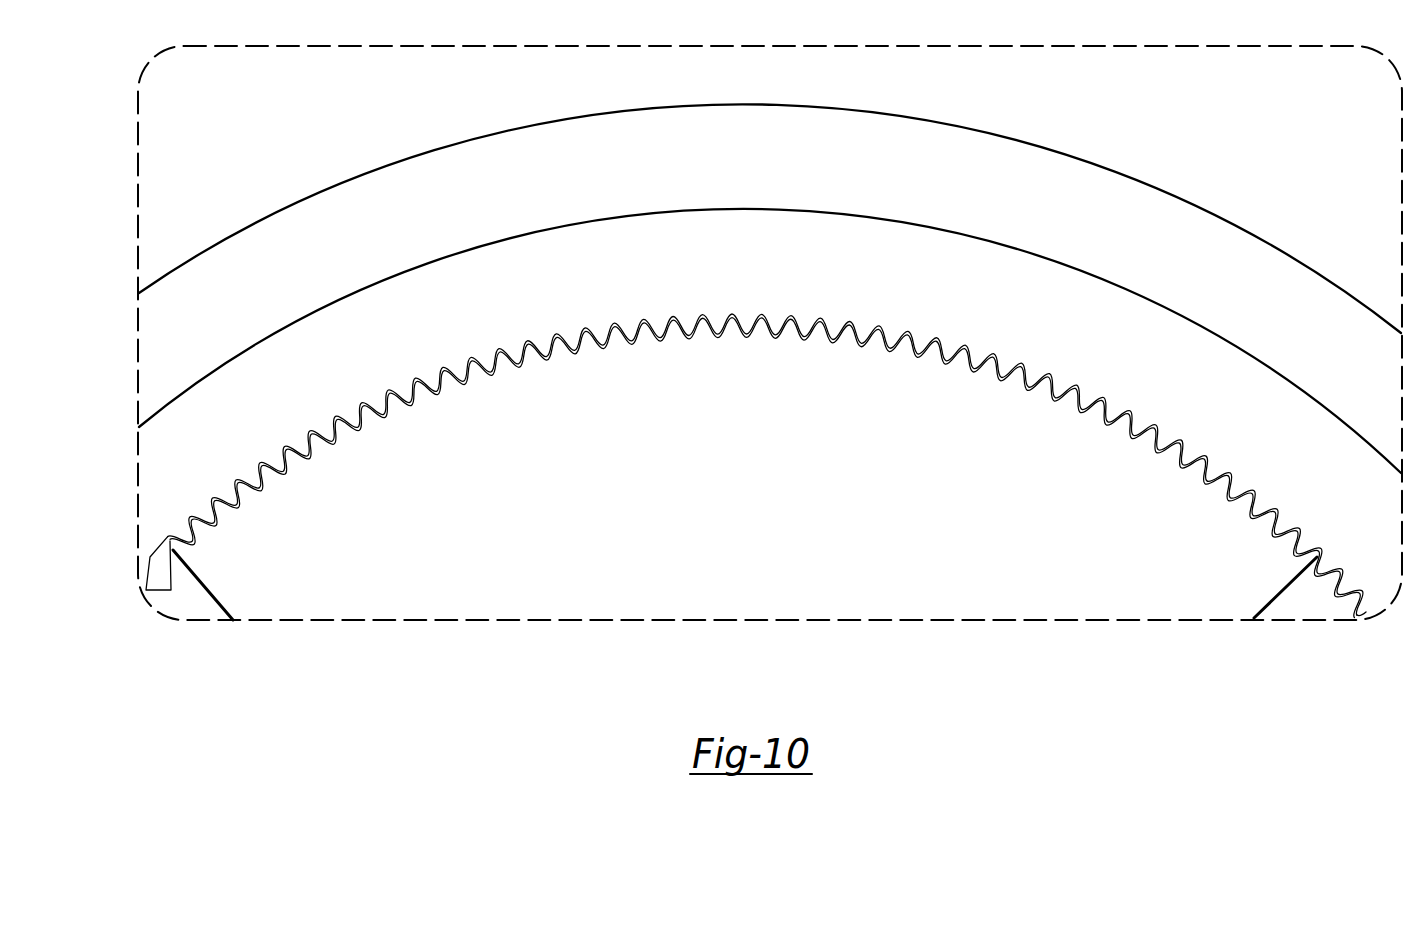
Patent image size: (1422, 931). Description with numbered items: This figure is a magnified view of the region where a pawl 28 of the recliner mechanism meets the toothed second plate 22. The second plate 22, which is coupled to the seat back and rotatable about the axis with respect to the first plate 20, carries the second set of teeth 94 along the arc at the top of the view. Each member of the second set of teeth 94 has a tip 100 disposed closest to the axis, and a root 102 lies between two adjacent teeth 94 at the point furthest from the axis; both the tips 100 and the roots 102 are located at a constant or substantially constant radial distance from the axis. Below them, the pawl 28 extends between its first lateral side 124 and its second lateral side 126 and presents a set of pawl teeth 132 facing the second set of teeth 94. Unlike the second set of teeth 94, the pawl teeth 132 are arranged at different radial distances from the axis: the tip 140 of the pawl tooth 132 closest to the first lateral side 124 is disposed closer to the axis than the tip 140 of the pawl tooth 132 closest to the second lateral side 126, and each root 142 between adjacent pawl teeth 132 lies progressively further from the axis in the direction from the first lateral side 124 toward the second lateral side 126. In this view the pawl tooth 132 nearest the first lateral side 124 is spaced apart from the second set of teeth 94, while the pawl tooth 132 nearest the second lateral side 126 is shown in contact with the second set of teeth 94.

The first plate 20 is at (368, 175).
The second plate 22 is at (143, 494).
The root 102 is at (274, 460).
The pawl teeth 132 is at (880, 338).
The tip 140 is at (519, 362).
The second set of teeth 94 is at (577, 348).
The tip 100 is at (491, 368).
The root 142 is at (361, 430).
The pawl 28 is at (786, 571).
The first lateral side 124 is at (197, 588).
The second lateral side 126 is at (1295, 579).